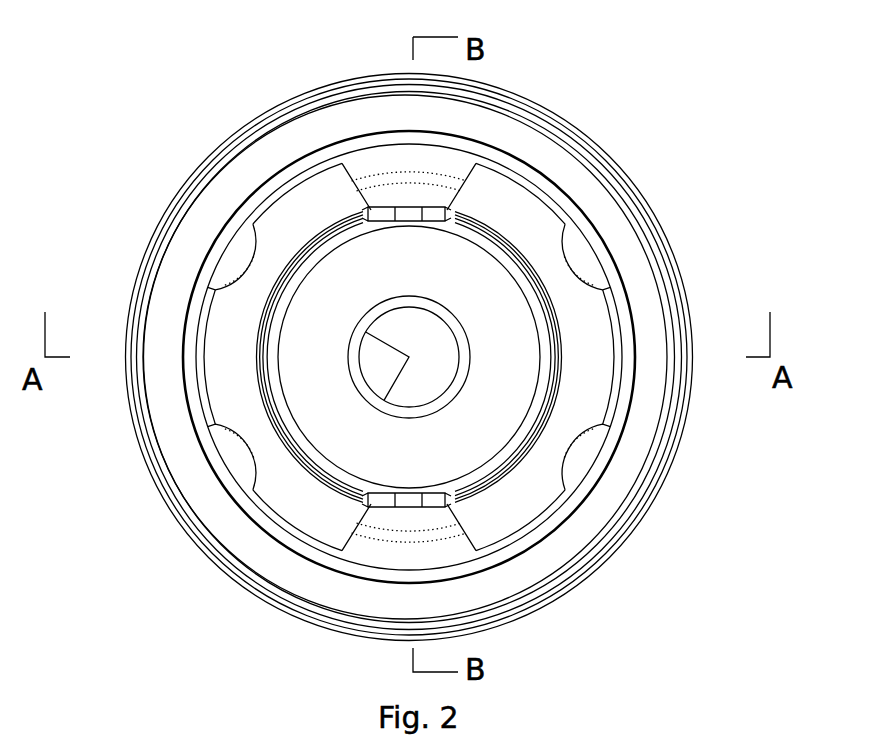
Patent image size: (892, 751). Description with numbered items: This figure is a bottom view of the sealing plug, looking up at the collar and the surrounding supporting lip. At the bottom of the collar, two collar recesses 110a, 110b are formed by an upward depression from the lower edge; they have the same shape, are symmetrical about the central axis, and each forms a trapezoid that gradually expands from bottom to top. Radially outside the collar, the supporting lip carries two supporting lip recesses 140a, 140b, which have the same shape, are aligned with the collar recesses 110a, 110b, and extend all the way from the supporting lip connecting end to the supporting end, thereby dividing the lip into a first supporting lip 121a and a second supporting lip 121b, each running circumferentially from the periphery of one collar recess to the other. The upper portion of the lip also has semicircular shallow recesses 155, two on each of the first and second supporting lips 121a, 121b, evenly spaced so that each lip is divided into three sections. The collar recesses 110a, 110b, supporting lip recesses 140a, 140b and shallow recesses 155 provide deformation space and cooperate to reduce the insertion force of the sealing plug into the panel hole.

The collar recess 110a is at (388, 209).
The collar recess 110b is at (399, 504).
The first supporting lip 121a is at (230, 322).
The second supporting lip 121b is at (578, 310).
The supporting lip recess 140a is at (410, 181).
The supporting lip recess 140b is at (417, 528).
The shallow recess 155 is at (575, 260).